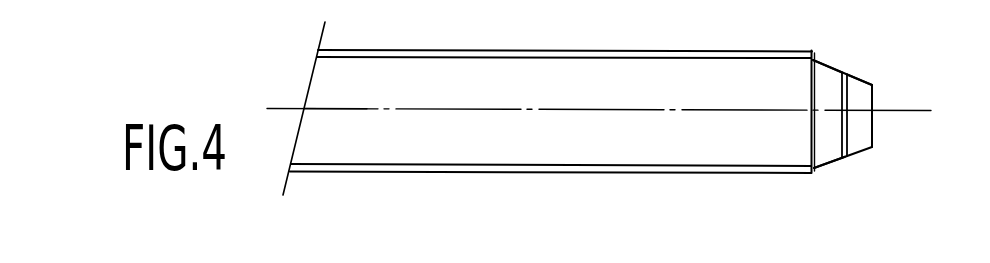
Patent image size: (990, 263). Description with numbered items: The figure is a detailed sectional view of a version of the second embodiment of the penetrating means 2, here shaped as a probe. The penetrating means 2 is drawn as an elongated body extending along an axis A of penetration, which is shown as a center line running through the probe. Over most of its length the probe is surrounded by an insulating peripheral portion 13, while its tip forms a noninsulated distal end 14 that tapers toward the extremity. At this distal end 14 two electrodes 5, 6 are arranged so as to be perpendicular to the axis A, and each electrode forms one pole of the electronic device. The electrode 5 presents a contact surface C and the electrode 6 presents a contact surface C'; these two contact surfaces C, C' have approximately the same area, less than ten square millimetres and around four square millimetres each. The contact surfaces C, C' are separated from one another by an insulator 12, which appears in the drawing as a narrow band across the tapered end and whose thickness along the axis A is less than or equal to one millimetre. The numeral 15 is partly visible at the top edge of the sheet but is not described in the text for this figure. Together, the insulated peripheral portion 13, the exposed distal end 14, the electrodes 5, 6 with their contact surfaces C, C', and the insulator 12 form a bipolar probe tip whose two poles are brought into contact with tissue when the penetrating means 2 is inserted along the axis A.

The penetrating means 2 is at (500, 51).
The insulating peripheral portion 13 is at (649, 55).
The noninsulated distal end 14 is at (870, 163).
The electrode 5 is at (885, 92).
The insulator 12 is at (867, 150).
The electrode 6 is at (830, 172).
The tip portion 15 is at (900, 50).
The axis A is at (367, 110).
The contact surface C' is at (817, 43).
The contact surface C is at (859, 50).